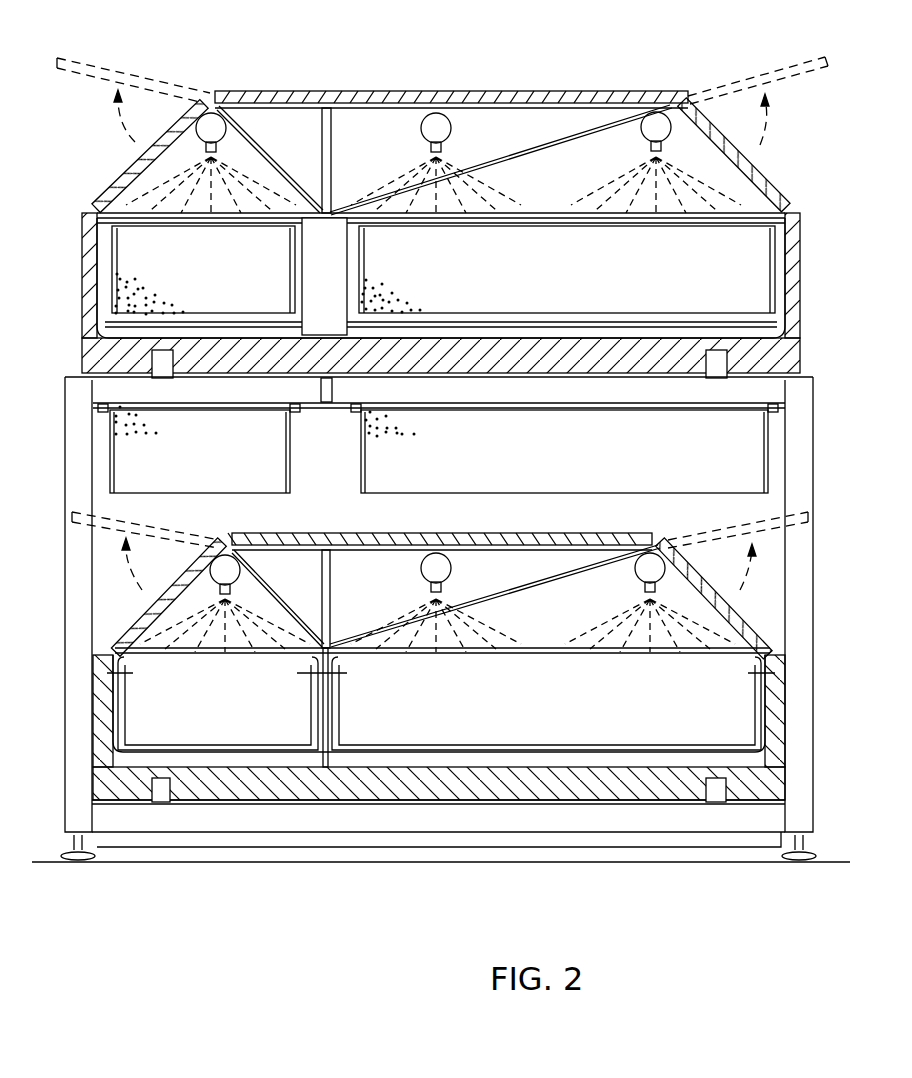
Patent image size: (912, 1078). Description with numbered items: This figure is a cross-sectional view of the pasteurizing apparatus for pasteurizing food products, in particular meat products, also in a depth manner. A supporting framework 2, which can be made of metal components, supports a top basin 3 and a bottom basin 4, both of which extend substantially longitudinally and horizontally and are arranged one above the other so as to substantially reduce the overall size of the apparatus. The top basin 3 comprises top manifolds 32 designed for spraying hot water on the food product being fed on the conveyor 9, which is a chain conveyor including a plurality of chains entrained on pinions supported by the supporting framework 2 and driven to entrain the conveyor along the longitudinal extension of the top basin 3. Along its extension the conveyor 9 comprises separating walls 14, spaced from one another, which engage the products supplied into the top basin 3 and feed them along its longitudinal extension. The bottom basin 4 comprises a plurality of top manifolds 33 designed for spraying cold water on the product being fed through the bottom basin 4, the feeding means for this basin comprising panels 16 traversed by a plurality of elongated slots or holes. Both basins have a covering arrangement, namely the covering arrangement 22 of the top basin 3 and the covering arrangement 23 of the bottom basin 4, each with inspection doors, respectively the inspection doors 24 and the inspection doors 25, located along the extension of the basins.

The supporting framework 2 is at (805, 415).
The top basin 3 is at (658, 343).
The bottom basin 4 is at (665, 785).
The chain conveyor 9 is at (200, 288).
The separating walls 14 is at (160, 263).
The panels 16 is at (492, 742).
The covering arrangement 22 is at (568, 99).
The covering arrangement 23 is at (426, 538).
The inspection doors 24 is at (148, 80).
The inspection doors 25 is at (703, 532).
The top manifolds 32 is at (210, 123).
The top manifolds 33 is at (225, 570).